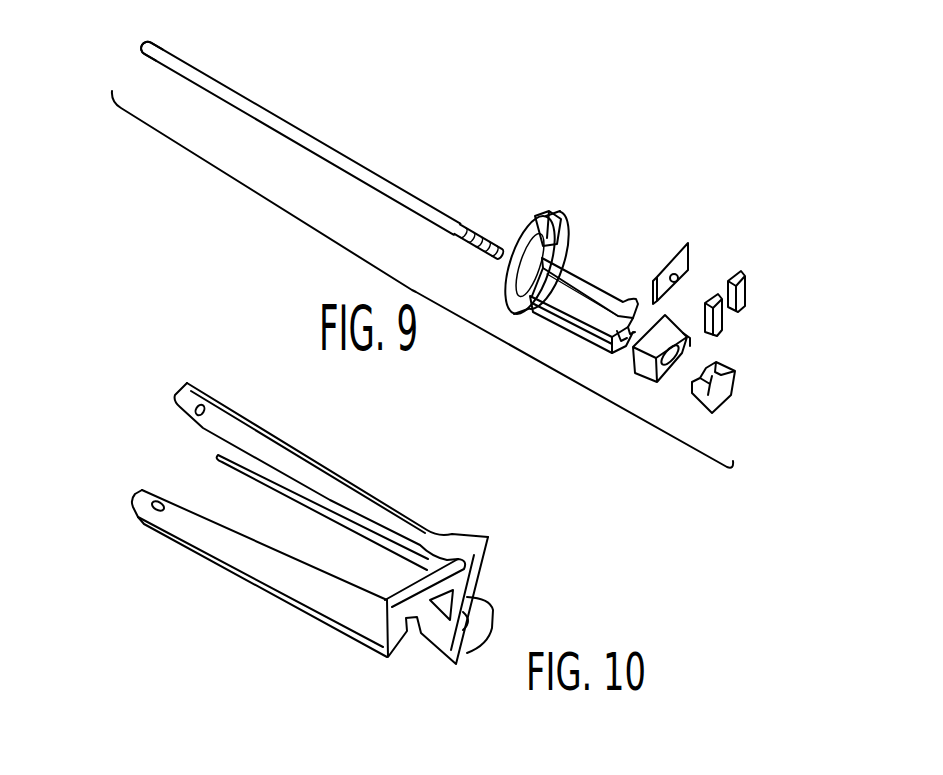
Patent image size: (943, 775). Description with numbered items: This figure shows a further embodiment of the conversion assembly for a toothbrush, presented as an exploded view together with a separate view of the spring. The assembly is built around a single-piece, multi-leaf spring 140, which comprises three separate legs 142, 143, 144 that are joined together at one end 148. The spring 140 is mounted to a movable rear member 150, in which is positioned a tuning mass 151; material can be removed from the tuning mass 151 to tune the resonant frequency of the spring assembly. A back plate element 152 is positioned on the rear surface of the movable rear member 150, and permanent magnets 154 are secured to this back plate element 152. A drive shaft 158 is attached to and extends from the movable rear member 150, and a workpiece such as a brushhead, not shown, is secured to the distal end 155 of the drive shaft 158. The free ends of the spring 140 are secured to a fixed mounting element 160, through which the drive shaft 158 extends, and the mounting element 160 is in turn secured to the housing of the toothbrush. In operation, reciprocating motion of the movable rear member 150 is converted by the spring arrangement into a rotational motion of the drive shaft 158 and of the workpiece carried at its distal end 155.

In FIG. 9, the multi-leaf spring 140 is at (627, 252).
In FIG. 10, the multi-leaf spring 140 is at (345, 435).
In FIG. 10, the first leg 142 is at (230, 404).
In FIG. 10, the second leg 143 is at (210, 543).
In FIG. 10, the third leg 144 is at (220, 463).
In FIG. 9, the joined end 148 is at (628, 353).
In FIG. 10, the joined end 148 is at (478, 573).
In FIG. 9, the movable rear member 150 is at (659, 382).
In FIG. 9, the tuning mass 151 is at (727, 404).
In FIG. 9, the back plate element 152 is at (687, 242).
In FIG. 9, the permanent magnets 154 is at (743, 304).
In FIG. 9, the distal end of drive shaft 155 is at (141, 44).
In FIG. 9, the drive shaft 158 is at (302, 126).
In FIG. 9, the fixed mounting element 160 is at (540, 212).